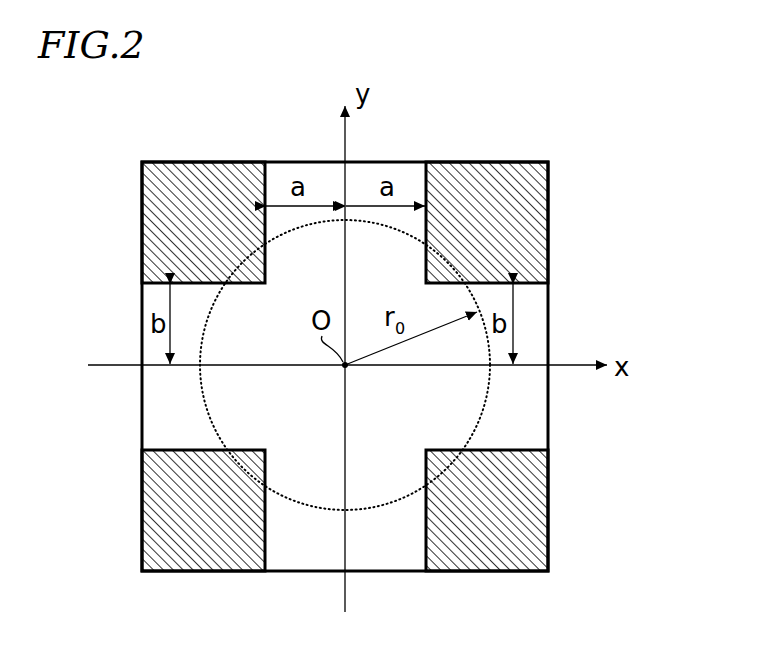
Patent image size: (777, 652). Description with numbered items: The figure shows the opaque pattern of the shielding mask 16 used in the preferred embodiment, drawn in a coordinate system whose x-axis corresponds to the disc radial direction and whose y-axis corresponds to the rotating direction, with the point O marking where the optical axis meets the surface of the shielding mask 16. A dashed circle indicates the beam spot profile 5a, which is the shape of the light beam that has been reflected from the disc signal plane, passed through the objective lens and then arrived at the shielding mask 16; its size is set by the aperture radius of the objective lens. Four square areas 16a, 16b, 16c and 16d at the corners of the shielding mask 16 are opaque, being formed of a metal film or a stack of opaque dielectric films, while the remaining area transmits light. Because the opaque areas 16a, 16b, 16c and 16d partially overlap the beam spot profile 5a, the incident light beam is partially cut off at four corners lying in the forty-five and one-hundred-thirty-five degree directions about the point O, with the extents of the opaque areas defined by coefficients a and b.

The shielding mask 16 is at (517, 128).
The opaque area 16a is at (533, 210).
The opaque area 16b is at (150, 211).
The opaque area 16c is at (152, 509).
The opaque area 16d is at (528, 512).
The beam spot profile 5a is at (311, 513).